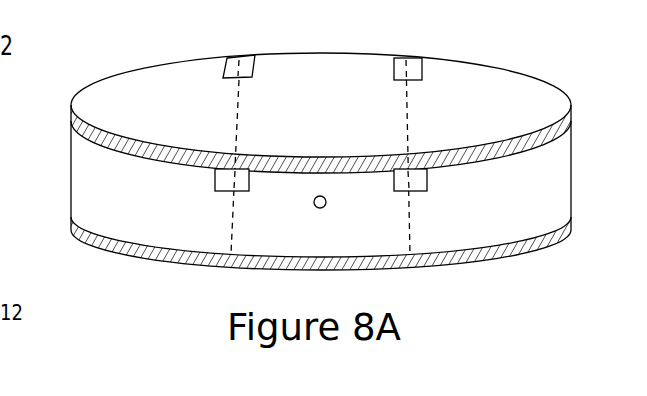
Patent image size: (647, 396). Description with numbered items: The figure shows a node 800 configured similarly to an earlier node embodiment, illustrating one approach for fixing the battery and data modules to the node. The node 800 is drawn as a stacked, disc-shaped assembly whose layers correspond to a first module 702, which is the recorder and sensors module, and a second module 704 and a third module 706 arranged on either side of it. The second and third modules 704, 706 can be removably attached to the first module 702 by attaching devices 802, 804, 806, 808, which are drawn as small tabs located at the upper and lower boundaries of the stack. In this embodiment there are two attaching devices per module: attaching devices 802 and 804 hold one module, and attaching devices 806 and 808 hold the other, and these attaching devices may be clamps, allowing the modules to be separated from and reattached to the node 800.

The node 800 is at (335, 20).
The first module 702 is at (377, 110).
The second module 704 is at (88, 175).
The third module 706 is at (542, 167).
The attaching device 802 is at (233, 56).
The attaching device 804 is at (396, 59).
The attaching device 806 is at (219, 186).
The attaching device 808 is at (414, 183).